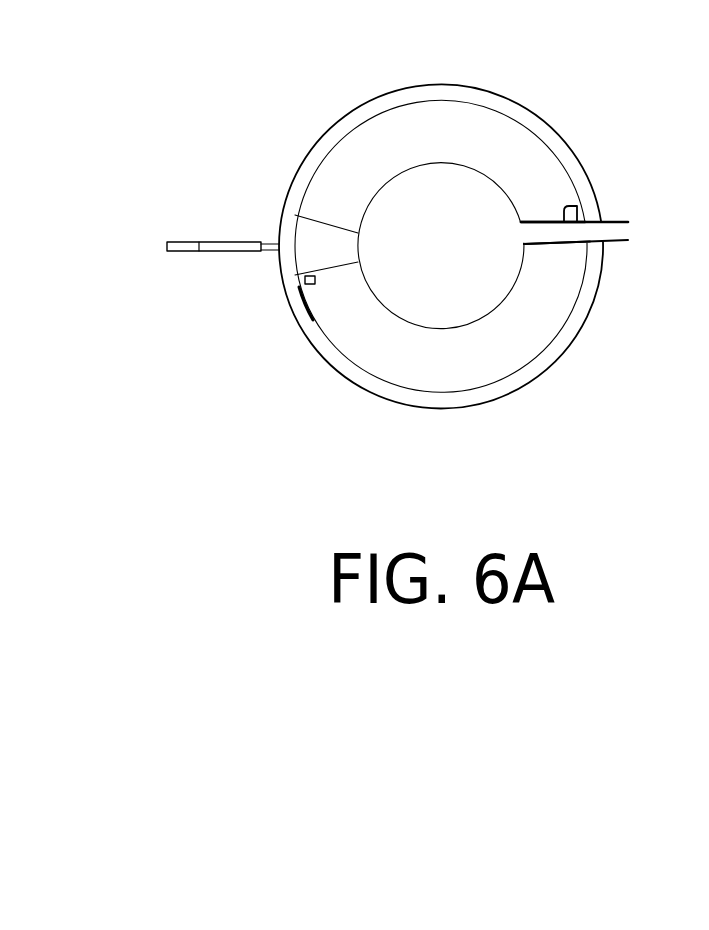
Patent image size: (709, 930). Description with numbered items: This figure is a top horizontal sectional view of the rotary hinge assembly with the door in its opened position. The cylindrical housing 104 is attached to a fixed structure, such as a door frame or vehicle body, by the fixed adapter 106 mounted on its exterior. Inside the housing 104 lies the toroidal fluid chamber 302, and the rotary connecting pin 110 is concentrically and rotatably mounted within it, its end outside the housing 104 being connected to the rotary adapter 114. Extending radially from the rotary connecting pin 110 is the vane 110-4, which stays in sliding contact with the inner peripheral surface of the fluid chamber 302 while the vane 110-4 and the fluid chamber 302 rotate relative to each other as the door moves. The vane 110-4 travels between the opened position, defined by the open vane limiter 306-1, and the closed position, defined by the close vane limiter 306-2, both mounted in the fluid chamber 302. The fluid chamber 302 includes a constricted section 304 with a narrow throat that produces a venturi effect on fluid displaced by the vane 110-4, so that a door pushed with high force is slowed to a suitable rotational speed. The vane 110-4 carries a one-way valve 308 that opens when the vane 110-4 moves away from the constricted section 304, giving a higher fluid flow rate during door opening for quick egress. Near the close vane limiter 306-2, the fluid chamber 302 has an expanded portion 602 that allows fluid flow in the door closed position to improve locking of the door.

The housing 104 is at (460, 84).
The fluid chamber 302 is at (455, 149).
The rotary connecting pin 110 is at (458, 252).
The constricted section 304 is at (323, 220).
The fixed adapter 106 is at (208, 242).
The rotary adapter 114 is at (612, 222).
The vane 110-4 is at (524, 222).
The open vane limiter 306-1 is at (571, 206).
The one-way valve 308 is at (557, 250).
The close vane limiter 306-2 is at (300, 284).
The expanded portion 602 is at (305, 315).